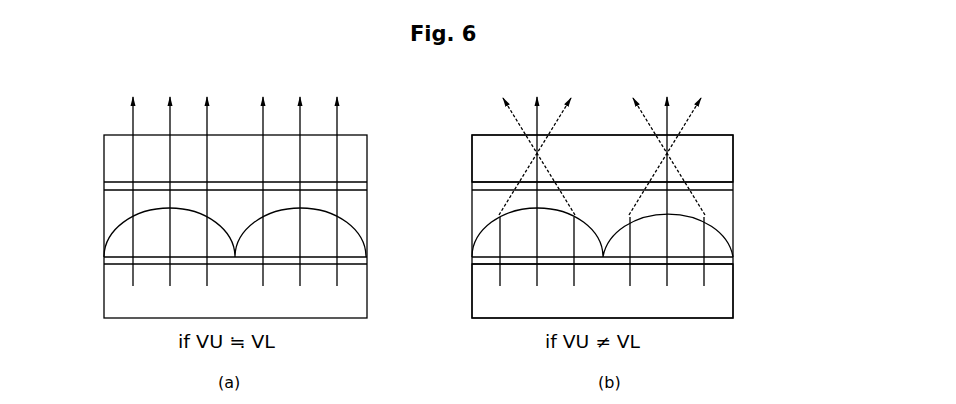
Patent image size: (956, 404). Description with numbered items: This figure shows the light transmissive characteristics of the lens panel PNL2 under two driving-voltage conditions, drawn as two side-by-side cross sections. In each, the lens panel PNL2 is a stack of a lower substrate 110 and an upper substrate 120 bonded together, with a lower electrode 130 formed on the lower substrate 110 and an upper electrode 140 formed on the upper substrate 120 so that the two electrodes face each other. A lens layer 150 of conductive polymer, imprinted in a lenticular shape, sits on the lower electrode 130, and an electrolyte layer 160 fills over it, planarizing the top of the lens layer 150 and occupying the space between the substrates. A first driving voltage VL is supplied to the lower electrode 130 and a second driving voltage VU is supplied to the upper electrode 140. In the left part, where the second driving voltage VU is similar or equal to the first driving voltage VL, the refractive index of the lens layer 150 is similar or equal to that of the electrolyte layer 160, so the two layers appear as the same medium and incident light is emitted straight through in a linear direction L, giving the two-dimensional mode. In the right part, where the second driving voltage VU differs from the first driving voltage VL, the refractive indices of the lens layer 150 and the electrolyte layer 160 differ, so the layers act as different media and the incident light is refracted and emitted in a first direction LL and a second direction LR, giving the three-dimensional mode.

The lower substrate 110 is at (727, 290).
The upper substrate 120 is at (727, 160).
The lower electrode 130 is at (727, 260).
The upper electrode 140 is at (727, 186).
The lens layer 150 is at (727, 242).
The electrolyte layer 160 is at (727, 209).
The lens panel PNL2 is at (791, 150).
The second driving voltage VU is at (104, 186).
The first driving voltage VL is at (104, 260).
The linear direction L is at (235, 181).
The first direction LL is at (535, 181).
The second direction LR is at (649, 181).